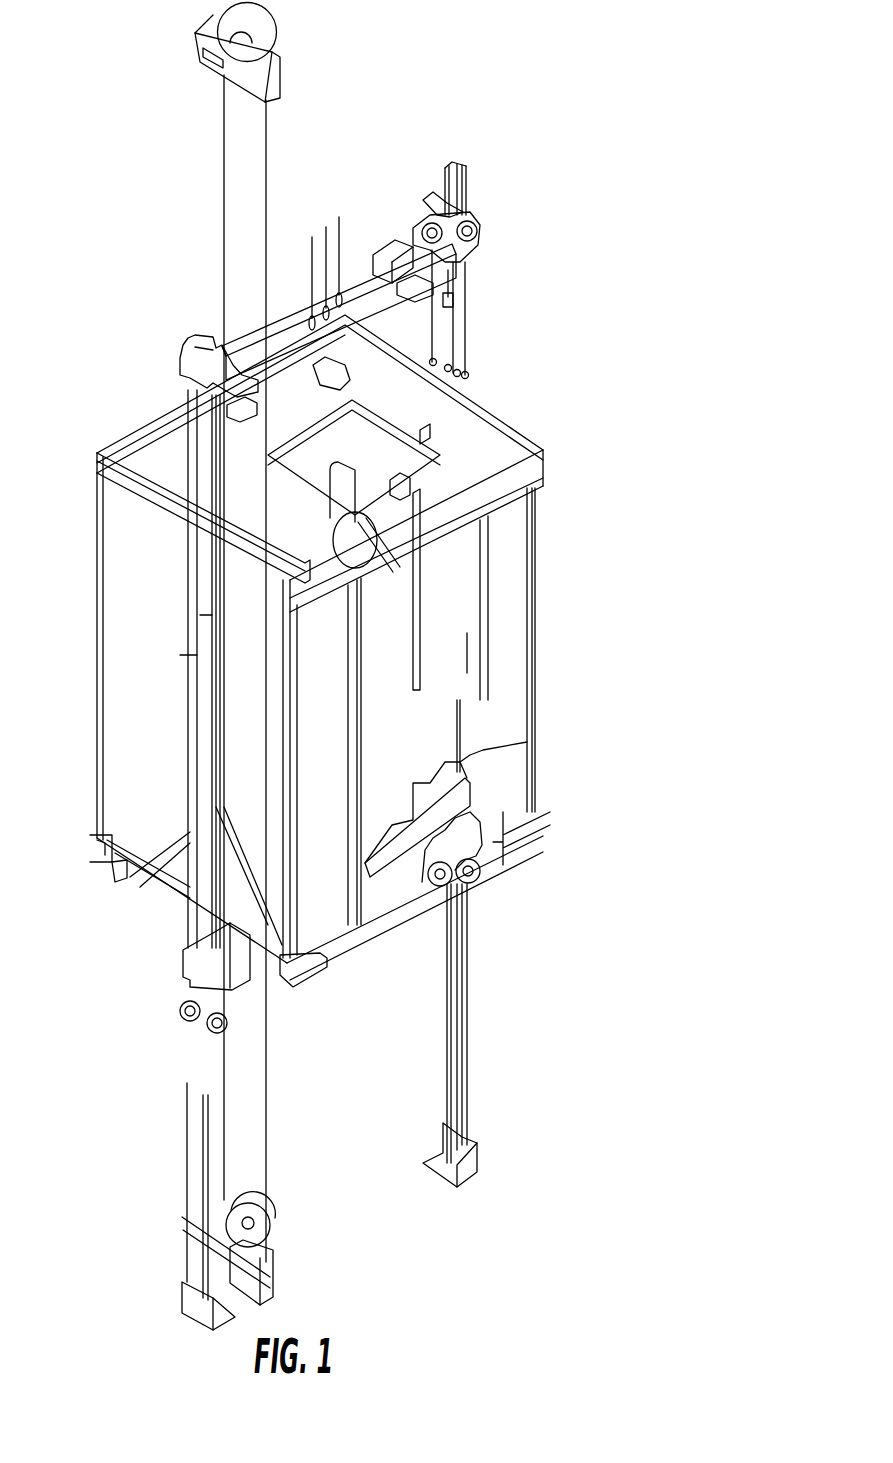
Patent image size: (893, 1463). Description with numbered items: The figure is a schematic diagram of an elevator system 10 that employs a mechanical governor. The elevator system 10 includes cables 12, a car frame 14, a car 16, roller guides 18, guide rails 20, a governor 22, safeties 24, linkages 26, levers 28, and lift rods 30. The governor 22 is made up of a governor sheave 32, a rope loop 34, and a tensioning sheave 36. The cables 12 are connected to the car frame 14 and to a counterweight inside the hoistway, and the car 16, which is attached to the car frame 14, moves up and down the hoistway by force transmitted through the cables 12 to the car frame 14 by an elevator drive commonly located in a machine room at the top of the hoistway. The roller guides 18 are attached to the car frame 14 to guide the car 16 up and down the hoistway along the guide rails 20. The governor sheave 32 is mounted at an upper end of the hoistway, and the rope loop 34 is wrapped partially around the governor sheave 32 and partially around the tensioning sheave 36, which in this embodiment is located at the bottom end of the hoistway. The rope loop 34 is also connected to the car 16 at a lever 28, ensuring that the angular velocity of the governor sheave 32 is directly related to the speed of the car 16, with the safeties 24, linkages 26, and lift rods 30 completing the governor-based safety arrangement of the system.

The elevator system 10 is at (541, 112).
The cables 12 is at (341, 245).
The car frame 14 is at (468, 333).
The car 16 is at (517, 585).
The roller guides 18 is at (462, 206).
The guide rails 20 is at (188, 1163).
The governor 22 is at (282, 67).
The safeties 24 is at (430, 852).
The linkages 26 is at (407, 321).
The levers 28 is at (466, 268).
The lift rods 30 is at (212, 615).
The governor sheave 32 is at (276, 13).
The rope loop 34 is at (222, 220).
The tensioning sheave 36 is at (273, 1228).